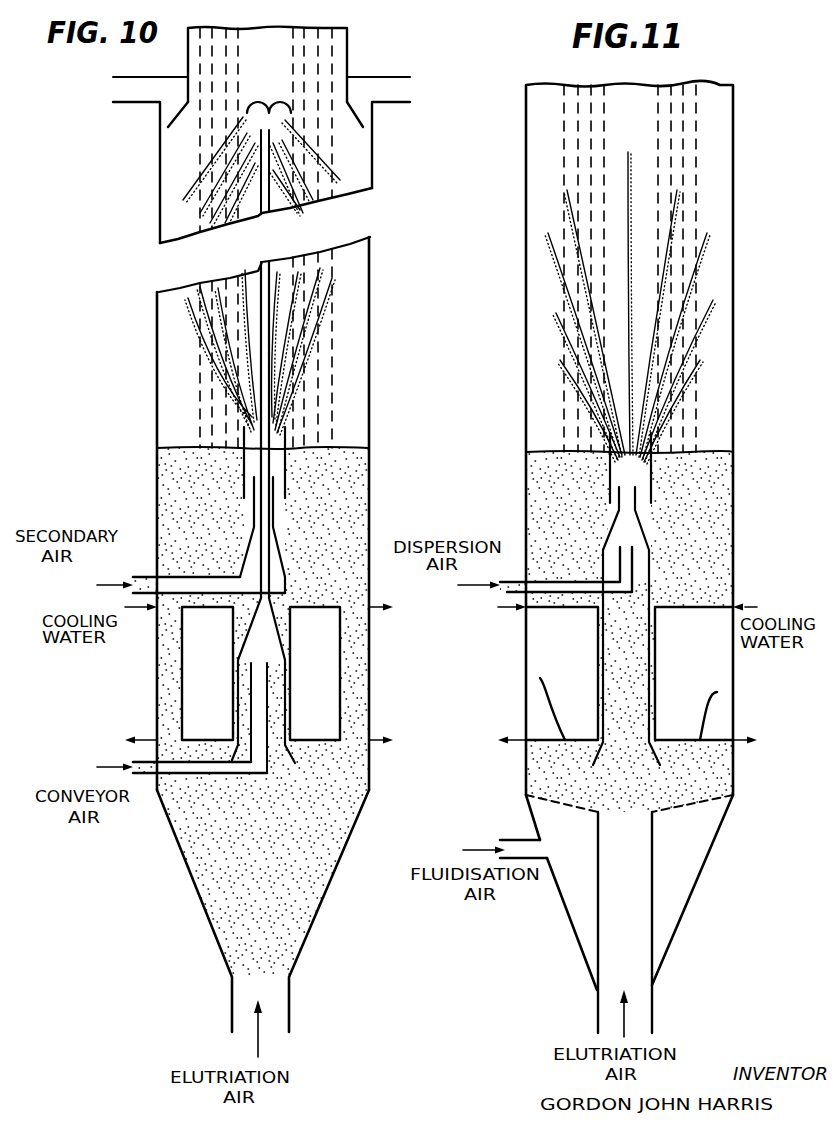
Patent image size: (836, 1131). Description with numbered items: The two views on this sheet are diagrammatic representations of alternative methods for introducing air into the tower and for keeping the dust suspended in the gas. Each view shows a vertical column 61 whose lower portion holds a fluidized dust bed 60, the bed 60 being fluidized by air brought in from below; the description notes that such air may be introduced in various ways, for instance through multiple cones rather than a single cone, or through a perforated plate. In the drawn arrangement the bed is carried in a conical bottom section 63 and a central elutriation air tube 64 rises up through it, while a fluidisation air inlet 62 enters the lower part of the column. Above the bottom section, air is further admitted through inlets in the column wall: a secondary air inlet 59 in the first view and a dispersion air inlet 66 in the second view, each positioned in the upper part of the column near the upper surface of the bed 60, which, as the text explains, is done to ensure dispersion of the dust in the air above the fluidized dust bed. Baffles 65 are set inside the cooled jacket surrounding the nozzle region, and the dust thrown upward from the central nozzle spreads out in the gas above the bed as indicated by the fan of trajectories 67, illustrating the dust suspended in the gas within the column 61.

In FIG. 10, the secondary air inlet 59 is at (170, 577).
In FIG. 11, the fluidised bed of particulate material 60 is at (537, 490).
In FIG. 11, the vessel column wall 61 is at (720, 390).
In FIG. 11, the fluidisation air inlet 62 is at (512, 842).
In FIG. 11, the conical bottom section 63 is at (693, 825).
In FIG. 11, the elutriation air tube 64 is at (602, 1003).
In FIG. 11, the baffle 65 is at (540, 678).
In FIG. 11, the dispersion air inlet 66 is at (508, 590).
In FIG. 11, the particle spray trajectories 67 is at (713, 245).